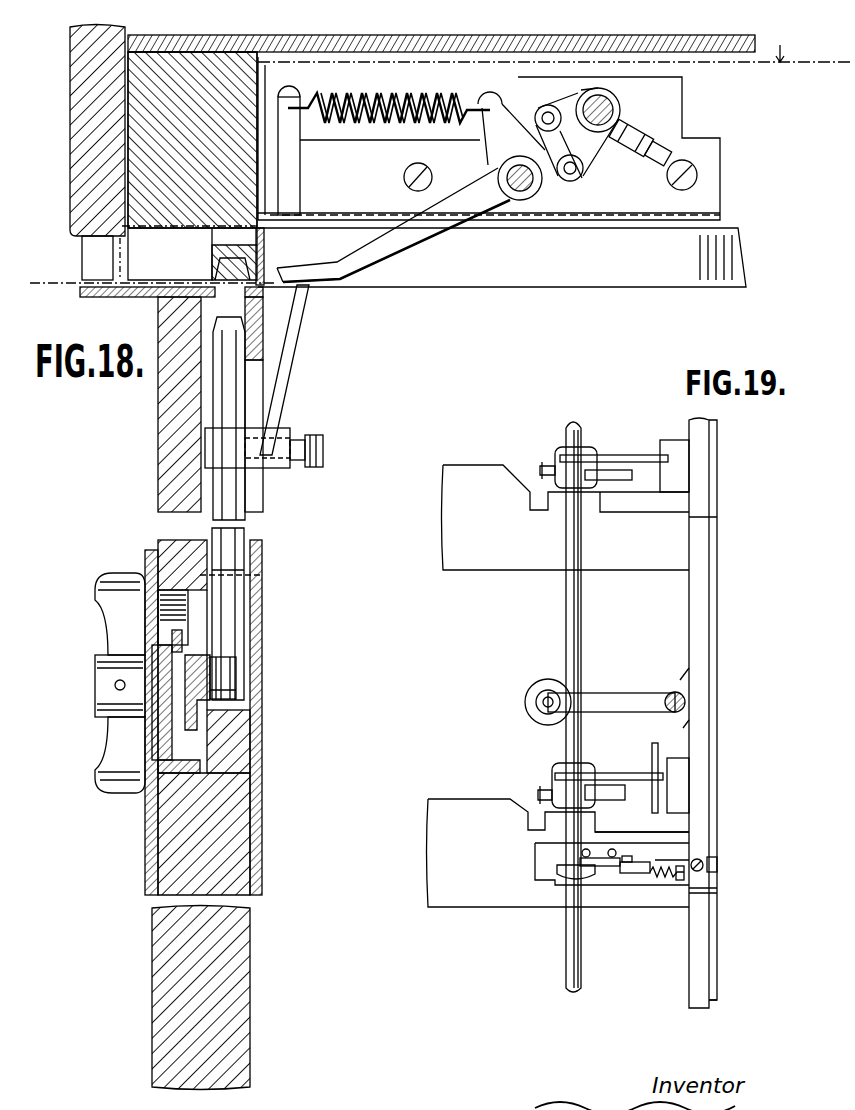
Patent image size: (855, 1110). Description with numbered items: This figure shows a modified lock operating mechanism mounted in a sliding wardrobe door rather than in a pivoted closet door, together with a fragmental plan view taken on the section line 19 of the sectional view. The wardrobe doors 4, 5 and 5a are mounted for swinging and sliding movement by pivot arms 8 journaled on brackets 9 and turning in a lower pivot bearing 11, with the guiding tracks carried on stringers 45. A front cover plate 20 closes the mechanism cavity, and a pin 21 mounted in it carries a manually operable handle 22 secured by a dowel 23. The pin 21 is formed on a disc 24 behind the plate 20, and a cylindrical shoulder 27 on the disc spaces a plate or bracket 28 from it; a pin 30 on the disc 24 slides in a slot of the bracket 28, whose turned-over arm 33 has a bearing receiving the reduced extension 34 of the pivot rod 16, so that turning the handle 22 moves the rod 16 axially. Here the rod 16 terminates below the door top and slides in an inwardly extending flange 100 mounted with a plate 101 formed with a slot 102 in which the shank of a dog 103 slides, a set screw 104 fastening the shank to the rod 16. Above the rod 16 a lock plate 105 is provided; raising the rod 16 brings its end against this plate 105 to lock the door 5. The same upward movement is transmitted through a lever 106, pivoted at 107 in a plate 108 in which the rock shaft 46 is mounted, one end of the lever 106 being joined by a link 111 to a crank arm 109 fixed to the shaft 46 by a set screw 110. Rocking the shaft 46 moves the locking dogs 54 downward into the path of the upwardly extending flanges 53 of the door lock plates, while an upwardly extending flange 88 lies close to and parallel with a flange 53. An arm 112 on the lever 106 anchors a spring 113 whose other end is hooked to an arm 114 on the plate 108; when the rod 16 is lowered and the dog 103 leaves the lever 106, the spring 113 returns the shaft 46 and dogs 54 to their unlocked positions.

In FIG. 19, the wardrobe door 4 is at (697, 958).
In FIG. 18, the wardrobe door 5 is at (165, 972).
In FIG. 19, the wardrobe door 5 is at (697, 597).
In FIG. 19, the door 5a is at (705, 452).
In FIG. 19, the pivot arm 8 is at (640, 706).
In FIG. 19, the bracket 9 is at (680, 695).
In FIG. 19, the lower pivot bearing 11 is at (548, 712).
In FIG. 18, the pivot rod 16 is at (230, 548).
In FIG. 19, the pivot rod 16 is at (718, 875).
In FIG. 18, the cavity 19 is at (412, 164).
In FIG. 18, the front cover plate 20 is at (150, 843).
In FIG. 18, the pin 21 is at (145, 700).
In FIG. 18, the manually operable handle 22 is at (108, 600).
In FIG. 19, the manually operable handle 22 is at (703, 860).
In FIG. 18, the dowel 23 is at (115, 685).
In FIG. 18, the disc 24 is at (165, 752).
In FIG. 18, the cylindrical shoulder 27 is at (182, 640).
In FIG. 18, the plate or bracket 28 is at (160, 787).
In FIG. 18, the pin 30 is at (220, 722).
In FIG. 18, the turned-over arm 33 is at (237, 680).
In FIG. 18, the extension 34 is at (228, 668).
In FIG. 19, the stringer 45 is at (445, 826).
In FIG. 19, the rock shaft 46 is at (568, 618).
In FIG. 19, the upwardly extending flange 53 is at (665, 497).
In FIG. 19, the locking dog 54 is at (630, 776).
In FIG. 19, the upwardly extending flange 88 is at (658, 760).
In FIG. 18, the inwardly extending flange 100 is at (210, 360).
In FIG. 18, the plate 101 is at (264, 487).
In FIG. 18, the slot 102 is at (265, 407).
In FIG. 18, the dog 103 is at (296, 360).
In FIG. 19, the dog 103 is at (692, 870).
In FIG. 18, the set screw 104 is at (325, 455).
In FIG. 18, the lock plate 105 is at (285, 250).
In FIG. 18, the lever 106 is at (403, 245).
In FIG. 19, the lever 106 is at (665, 865).
In FIG. 18, the pivot 107 is at (522, 200).
In FIG. 19, the pivot 107 is at (642, 822).
In FIG. 18, the plate 108 is at (622, 200).
In FIG. 19, the plate 108 is at (545, 905).
In FIG. 18, the crank arm 109 is at (577, 103).
In FIG. 19, the crank arm 109 is at (560, 872).
In FIG. 18, the set screw 110 is at (680, 153).
In FIG. 18, the link 111 is at (577, 172).
In FIG. 19, the link 111 is at (578, 862).
In FIG. 18, the arm 112 is at (490, 95).
In FIG. 19, the arm 112 is at (630, 876).
In FIG. 18, the spring 113 is at (445, 80).
In FIG. 19, the spring 113 is at (662, 882).
In FIG. 18, the arm 114 is at (292, 92).
In FIG. 19, the arm 114 is at (678, 884).